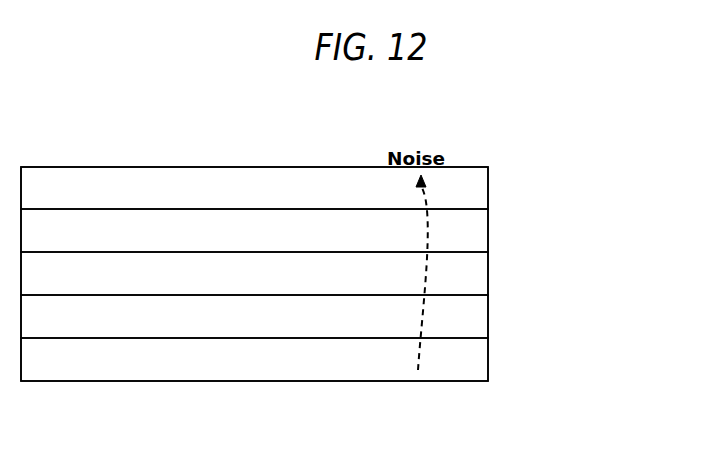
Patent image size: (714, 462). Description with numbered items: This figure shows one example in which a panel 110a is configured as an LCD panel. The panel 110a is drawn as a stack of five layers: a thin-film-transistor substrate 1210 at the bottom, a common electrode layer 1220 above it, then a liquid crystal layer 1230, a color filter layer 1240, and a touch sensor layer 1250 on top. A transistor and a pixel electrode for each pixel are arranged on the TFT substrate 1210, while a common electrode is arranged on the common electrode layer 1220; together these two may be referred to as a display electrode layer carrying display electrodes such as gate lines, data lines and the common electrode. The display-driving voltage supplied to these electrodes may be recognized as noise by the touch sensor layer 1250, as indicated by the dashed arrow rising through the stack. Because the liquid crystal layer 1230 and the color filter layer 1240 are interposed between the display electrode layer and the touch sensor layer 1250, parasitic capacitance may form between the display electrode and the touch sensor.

The panel 110a is at (108, 142).
The touch sensor layer 1250 is at (489, 178).
The color filter layer 1240 is at (489, 221).
The liquid crystal layer 1230 is at (489, 265).
The common electrode layer 1220 is at (489, 310).
The TFT substrate 1210 is at (489, 355).